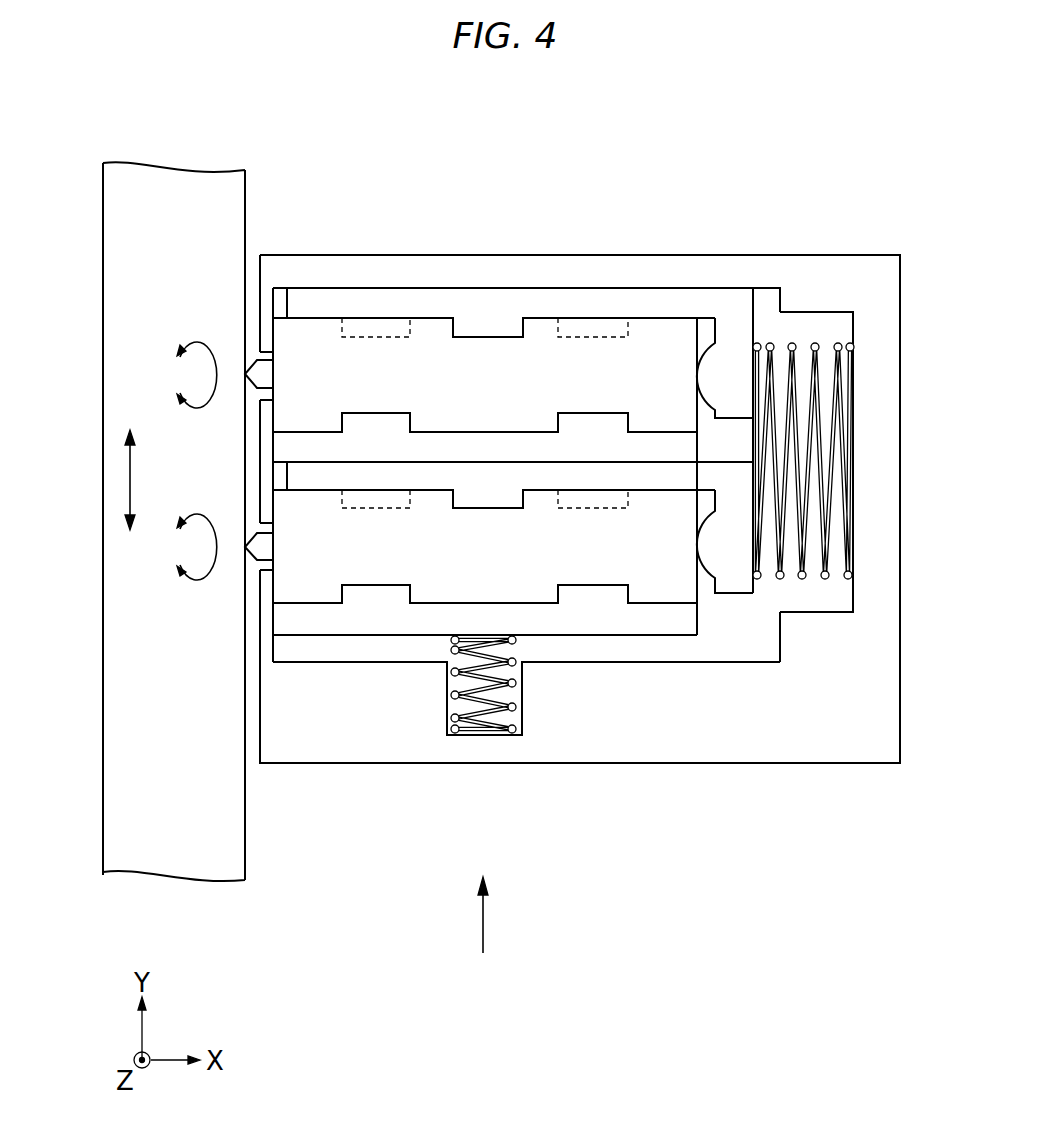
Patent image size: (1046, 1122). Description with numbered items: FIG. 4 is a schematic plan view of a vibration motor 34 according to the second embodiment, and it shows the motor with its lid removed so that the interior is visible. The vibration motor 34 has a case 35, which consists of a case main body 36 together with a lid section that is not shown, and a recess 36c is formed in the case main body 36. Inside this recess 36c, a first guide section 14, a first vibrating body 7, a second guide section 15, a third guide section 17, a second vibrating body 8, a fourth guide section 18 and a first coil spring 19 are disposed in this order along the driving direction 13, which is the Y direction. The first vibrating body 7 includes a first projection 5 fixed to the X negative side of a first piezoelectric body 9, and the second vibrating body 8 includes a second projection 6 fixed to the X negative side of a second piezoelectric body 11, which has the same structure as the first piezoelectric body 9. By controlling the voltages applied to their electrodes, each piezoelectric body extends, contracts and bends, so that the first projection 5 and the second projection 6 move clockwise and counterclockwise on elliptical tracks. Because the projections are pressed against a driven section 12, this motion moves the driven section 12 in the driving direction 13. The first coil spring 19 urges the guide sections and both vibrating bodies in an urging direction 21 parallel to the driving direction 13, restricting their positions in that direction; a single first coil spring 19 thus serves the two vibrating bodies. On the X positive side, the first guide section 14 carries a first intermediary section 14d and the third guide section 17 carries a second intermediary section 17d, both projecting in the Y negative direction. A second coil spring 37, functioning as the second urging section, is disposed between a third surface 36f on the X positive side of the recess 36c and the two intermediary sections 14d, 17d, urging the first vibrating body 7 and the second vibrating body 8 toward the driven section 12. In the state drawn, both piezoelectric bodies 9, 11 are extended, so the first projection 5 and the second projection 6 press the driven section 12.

The first projection 5 is at (258, 372).
The second projection 6 is at (262, 545).
The first vibrating body 7 is at (262, 168).
The second vibrating body 8 is at (330, 900).
The first piezoelectric body 9 is at (310, 325).
The second piezoelectric body 11 is at (317, 580).
The driven section 12 is at (115, 200).
The driving direction 13 is at (130, 476).
The first guide section 14 is at (658, 303).
The first intermediary section 14d is at (728, 360).
The second guide section 15 is at (660, 437).
The third guide section 17 is at (660, 478).
The second intermediary section 17d is at (732, 557).
The fourth guide section 18 is at (595, 625).
The first coil spring 19 is at (467, 692).
The urging direction 21 is at (485, 922).
The vibration motor 34 is at (863, 140).
The case 35 is at (875, 745).
The case main body 36 is at (520, 475).
The recess 36c is at (680, 655).
The third surface 36f is at (848, 325).
The second coil spring 37 is at (805, 395).